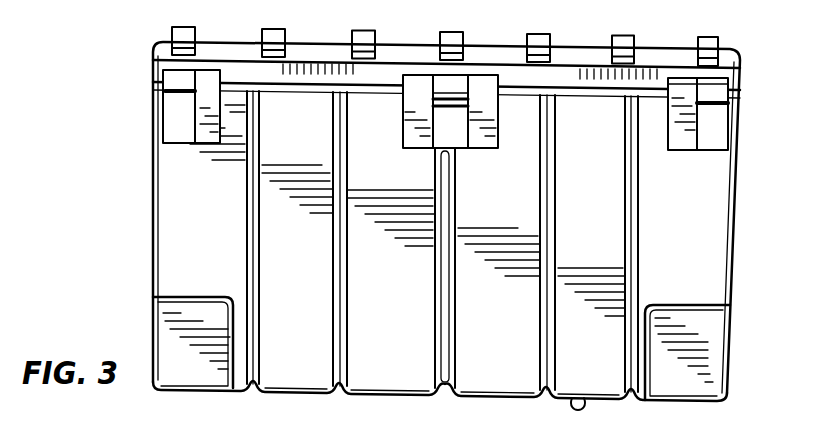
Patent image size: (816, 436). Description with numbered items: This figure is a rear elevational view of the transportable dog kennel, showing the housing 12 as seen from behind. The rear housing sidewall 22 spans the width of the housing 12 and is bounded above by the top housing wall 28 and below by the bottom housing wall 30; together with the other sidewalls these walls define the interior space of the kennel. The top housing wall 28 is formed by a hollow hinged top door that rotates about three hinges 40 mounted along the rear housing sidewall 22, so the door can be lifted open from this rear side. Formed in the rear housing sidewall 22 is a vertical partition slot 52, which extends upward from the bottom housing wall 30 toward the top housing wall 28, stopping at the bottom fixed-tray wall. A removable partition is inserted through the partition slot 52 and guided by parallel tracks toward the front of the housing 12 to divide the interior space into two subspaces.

The housing 12 is at (735, 228).
The rear housing sidewall 22 is at (307, 281).
The top housing wall 28 is at (672, 44).
The bottom housing wall 30 is at (576, 396).
The hinges 40 is at (172, 96).
The vertical partition slot 52 is at (455, 287).